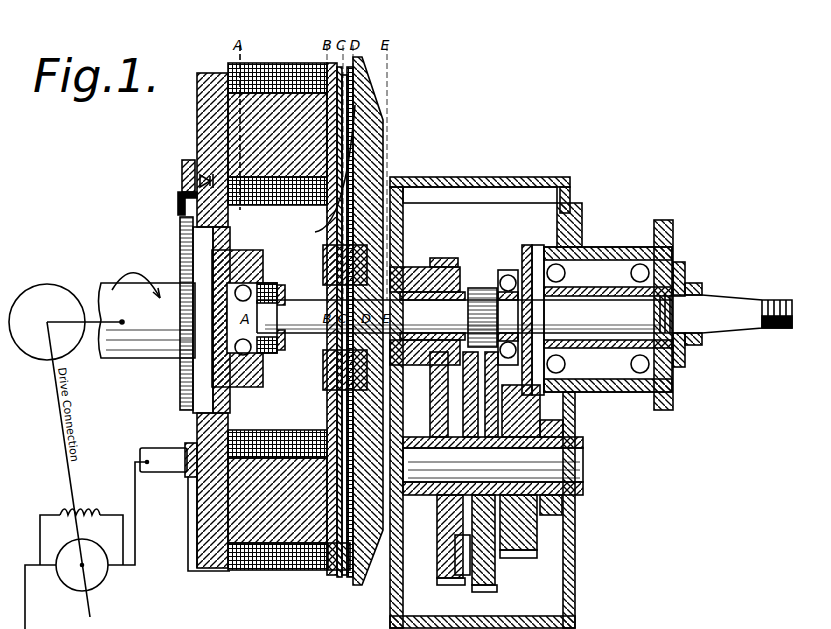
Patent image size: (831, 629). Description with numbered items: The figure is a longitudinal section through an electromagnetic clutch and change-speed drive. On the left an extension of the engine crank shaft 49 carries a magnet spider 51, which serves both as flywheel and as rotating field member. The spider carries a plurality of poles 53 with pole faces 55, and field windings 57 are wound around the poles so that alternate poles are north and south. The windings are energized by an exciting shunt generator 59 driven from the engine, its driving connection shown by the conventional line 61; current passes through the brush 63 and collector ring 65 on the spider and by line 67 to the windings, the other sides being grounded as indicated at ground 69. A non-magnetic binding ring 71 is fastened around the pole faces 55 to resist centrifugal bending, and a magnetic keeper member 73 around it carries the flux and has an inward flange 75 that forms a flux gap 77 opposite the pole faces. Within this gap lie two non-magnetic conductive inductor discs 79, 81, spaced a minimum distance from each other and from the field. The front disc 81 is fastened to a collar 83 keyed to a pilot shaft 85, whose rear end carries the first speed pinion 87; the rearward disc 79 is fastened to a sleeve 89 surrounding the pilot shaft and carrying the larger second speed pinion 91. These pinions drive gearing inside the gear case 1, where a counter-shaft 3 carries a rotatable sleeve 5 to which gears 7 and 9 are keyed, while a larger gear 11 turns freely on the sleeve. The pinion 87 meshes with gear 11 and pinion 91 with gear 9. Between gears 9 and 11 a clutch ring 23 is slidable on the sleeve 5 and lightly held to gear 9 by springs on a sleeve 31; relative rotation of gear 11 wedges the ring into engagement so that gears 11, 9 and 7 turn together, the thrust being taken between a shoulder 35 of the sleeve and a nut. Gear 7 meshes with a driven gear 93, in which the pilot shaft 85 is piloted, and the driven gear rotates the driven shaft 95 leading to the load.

The gear case 1 is at (575, 512).
The counter-shaft 3 is at (560, 462).
The sleeve 5 is at (535, 520).
The gear 7 is at (535, 540).
The gear 9 is at (450, 578).
The gear 11 is at (497, 580).
The clutch ring 23 is at (450, 520).
The sleeve 31 is at (482, 540).
The shoulder 35 is at (560, 505).
The crank shaft 49 is at (140, 360).
The magnet spider 51 is at (215, 537).
The poles 53 is at (253, 130).
The pole faces 55 is at (337, 132).
The field windings 57 is at (258, 205).
The exciting shunt generator 59 is at (99, 580).
The line 61 is at (135, 490).
The brush 63 is at (157, 448).
The collector ring 65 is at (188, 470).
The line 67 is at (214, 571).
The ground 69 is at (200, 181).
The binding ring 71 is at (355, 570).
The magnetic keeper member 73 is at (372, 166).
The flange 75 is at (352, 110).
The flux gap 77 is at (353, 152).
The disc 79 is at (350, 92).
The disc 81 is at (335, 95).
The collar 83 is at (323, 262).
The pilot shaft 85 is at (440, 285).
The pinion 87 is at (484, 270).
The sleeve 89 is at (410, 275).
The pinion 91 is at (468, 270).
The driven gear 93 is at (520, 260).
The driven shaft 95 is at (602, 287).